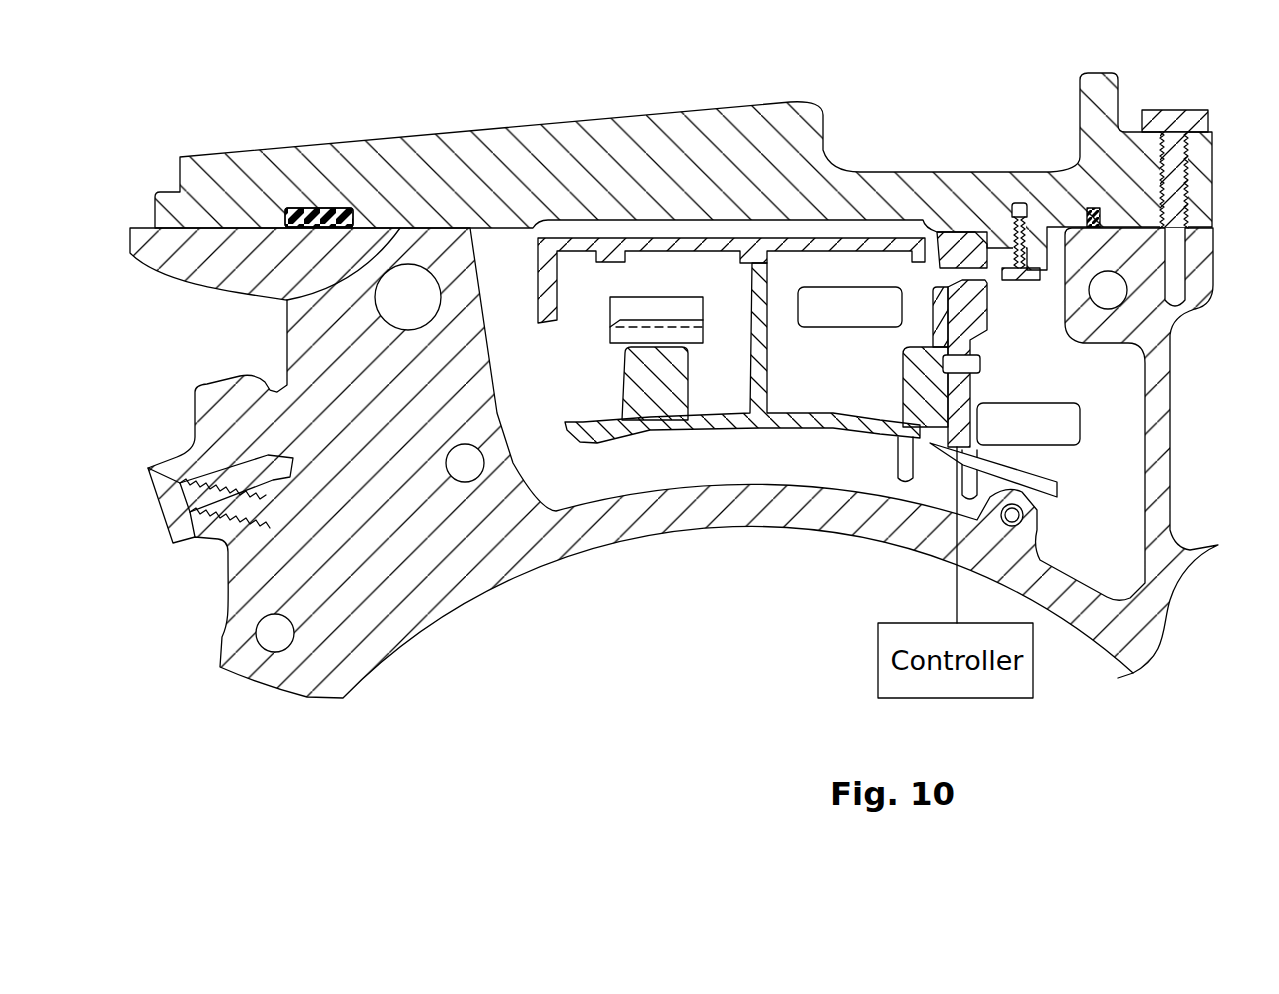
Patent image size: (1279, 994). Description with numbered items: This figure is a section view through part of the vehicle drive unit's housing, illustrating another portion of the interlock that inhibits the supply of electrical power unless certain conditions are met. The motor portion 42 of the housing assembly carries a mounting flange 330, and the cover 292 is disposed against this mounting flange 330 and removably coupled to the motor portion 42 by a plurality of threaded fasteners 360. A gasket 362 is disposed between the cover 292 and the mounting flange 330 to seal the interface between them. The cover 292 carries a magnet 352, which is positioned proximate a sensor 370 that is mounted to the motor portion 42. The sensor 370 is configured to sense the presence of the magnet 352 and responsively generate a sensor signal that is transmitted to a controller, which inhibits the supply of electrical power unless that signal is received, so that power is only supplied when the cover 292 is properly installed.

The motor portion 42 is at (317, 353).
The cover 292 is at (648, 137).
The mounting flange 330 is at (283, 300).
The magnet 352 is at (960, 245).
The threaded fasteners 360 is at (1170, 115).
The gasket 362 is at (320, 215).
The sensor 370 is at (980, 318).